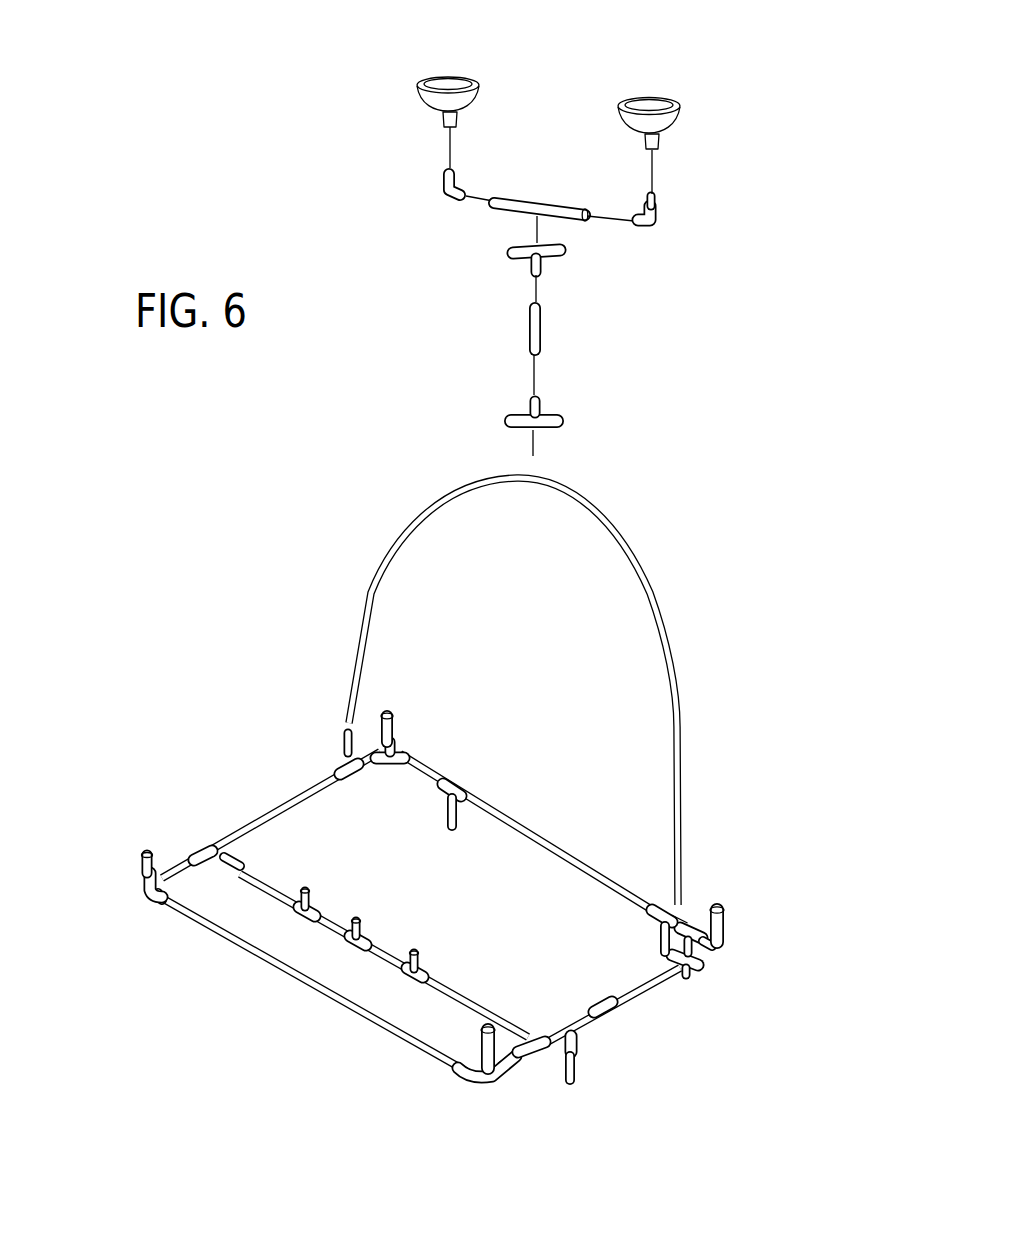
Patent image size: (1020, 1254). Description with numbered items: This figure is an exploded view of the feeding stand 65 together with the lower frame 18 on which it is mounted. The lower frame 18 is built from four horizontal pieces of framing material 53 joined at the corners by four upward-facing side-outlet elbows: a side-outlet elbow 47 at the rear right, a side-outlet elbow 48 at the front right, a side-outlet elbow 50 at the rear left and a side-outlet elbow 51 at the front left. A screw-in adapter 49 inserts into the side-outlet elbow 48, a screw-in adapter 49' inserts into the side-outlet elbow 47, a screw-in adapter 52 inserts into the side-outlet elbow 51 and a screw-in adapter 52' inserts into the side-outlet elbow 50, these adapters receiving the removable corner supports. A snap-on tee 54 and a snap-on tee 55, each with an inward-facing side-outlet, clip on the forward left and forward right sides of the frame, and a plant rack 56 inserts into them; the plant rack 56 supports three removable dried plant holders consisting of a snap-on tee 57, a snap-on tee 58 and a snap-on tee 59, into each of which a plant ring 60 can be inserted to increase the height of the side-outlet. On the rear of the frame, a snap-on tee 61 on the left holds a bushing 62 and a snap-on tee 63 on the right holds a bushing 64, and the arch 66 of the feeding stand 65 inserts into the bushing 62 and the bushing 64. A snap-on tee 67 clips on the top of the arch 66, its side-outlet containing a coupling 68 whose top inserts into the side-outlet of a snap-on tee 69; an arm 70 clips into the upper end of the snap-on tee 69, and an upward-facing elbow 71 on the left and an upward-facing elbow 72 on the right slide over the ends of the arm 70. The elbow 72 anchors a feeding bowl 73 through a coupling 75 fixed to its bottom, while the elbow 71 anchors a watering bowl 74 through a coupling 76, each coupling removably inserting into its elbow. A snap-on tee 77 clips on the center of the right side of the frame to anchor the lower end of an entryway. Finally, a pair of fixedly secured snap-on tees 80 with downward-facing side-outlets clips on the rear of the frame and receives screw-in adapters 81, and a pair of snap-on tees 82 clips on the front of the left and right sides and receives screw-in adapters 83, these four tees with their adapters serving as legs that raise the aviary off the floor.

The lower frame 18 is at (287, 1023).
The side-outlet elbow 47 is at (722, 960).
The side-outlet elbow 48 is at (470, 1080).
The screw-in adapter 49 is at (426, 1074).
The screw-in adapter 49' is at (761, 934).
The side-outlet elbow 50 is at (398, 735).
The side-outlet elbow 51 is at (142, 874).
The screw-in adapter 52 is at (115, 804).
The screw-in adapter 52' is at (426, 694).
The horizontal pieces of framing material 53 is at (322, 782).
The snap-on tee 54 is at (200, 853).
The snap-on tee 55 is at (538, 1042).
The plant rack 56 is at (205, 922).
The snap-on tee 57 is at (268, 893).
The snap-on tee 58 is at (353, 942).
The snap-on tee 59 is at (417, 975).
The plant ring 60 is at (312, 900).
The snap-on tee 61 is at (340, 768).
The bushing 62 is at (343, 737).
The snap-on tee 63 is at (686, 975).
The bushing 64 is at (700, 910).
The feeding stand 65 is at (692, 543).
The arch 66 is at (593, 513).
The snap-on tee 67 is at (507, 420).
The coupling 68 is at (527, 318).
The snap-on tee 69 is at (512, 266).
The arm 70 is at (570, 212).
The elbow 71 is at (440, 187).
The elbow 72 is at (664, 228).
The feeding bowl 73 is at (680, 102).
The watering bowl 74 is at (437, 76).
The coupling 75 is at (660, 139).
The coupling 76 is at (443, 122).
The snap-on tee 77 is at (620, 1012).
The snap-on tees 80 is at (458, 786).
The screw-in adapters 81 is at (447, 822).
The snap-on tees 82 is at (235, 845).
The screw-in adapters 83 is at (250, 870).